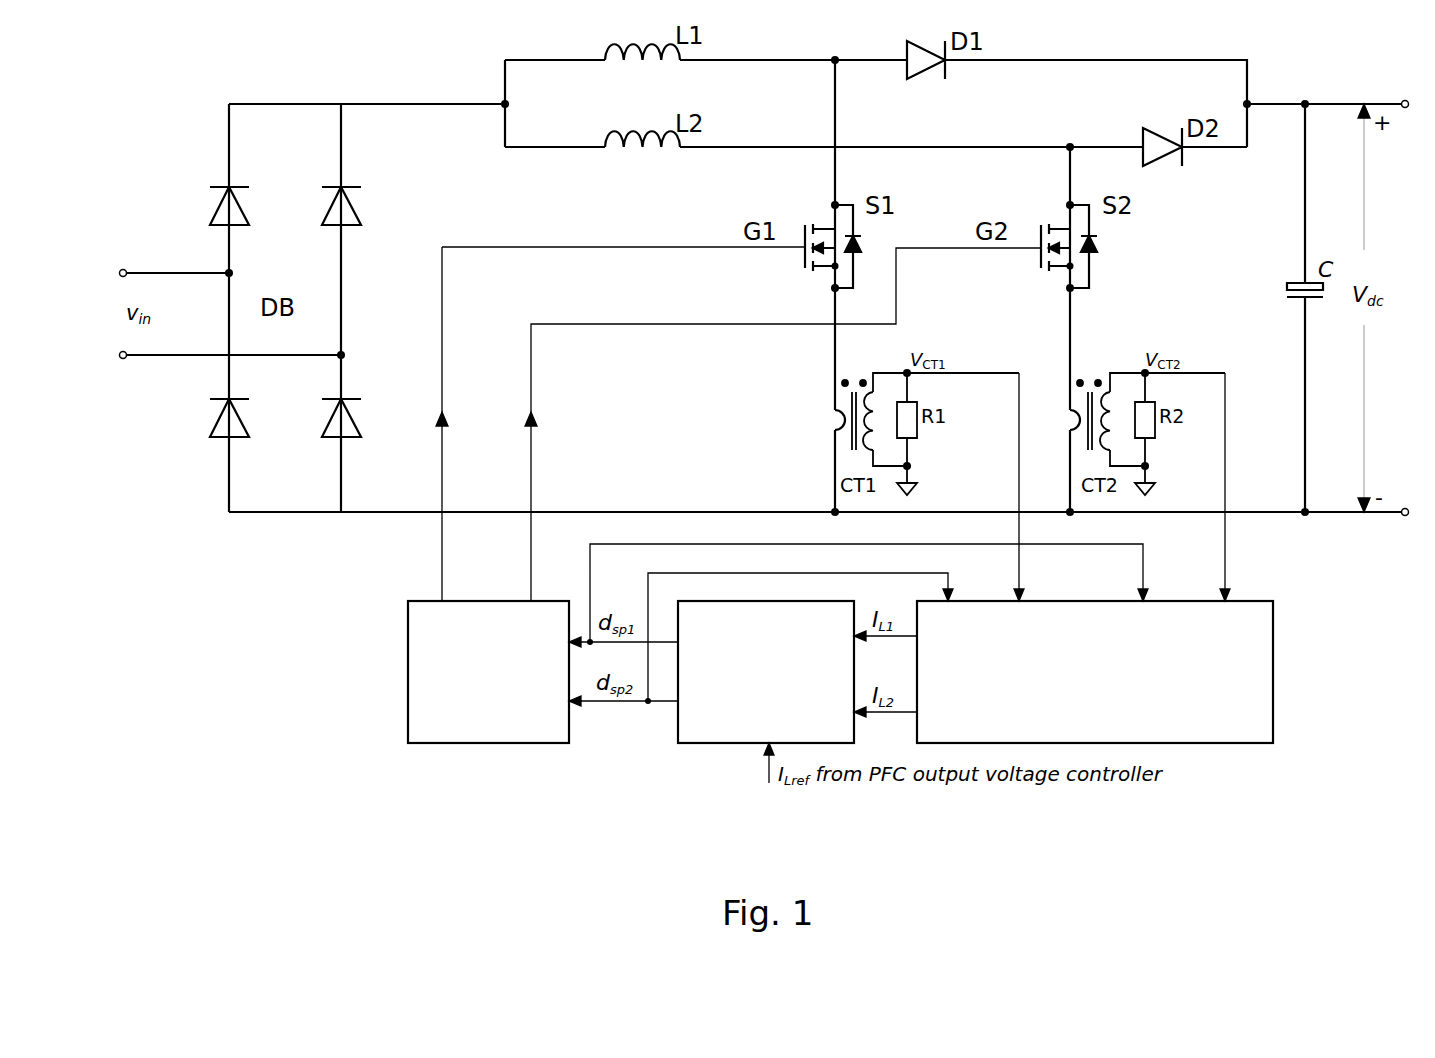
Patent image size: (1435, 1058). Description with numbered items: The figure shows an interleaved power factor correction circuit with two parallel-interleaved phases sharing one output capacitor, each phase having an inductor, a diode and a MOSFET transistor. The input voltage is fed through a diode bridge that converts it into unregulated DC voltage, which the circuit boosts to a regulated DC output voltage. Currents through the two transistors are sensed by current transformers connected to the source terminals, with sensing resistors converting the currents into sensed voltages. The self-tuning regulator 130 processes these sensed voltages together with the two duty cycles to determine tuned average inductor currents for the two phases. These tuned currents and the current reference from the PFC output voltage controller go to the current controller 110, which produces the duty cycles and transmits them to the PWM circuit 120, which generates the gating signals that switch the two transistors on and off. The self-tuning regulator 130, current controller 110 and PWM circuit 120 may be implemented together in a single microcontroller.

The current controller 110 is at (703, 719).
The pulse width modulator (PWM) circuit 120 is at (432, 705).
The self-tuning regulator 130 is at (1252, 673).